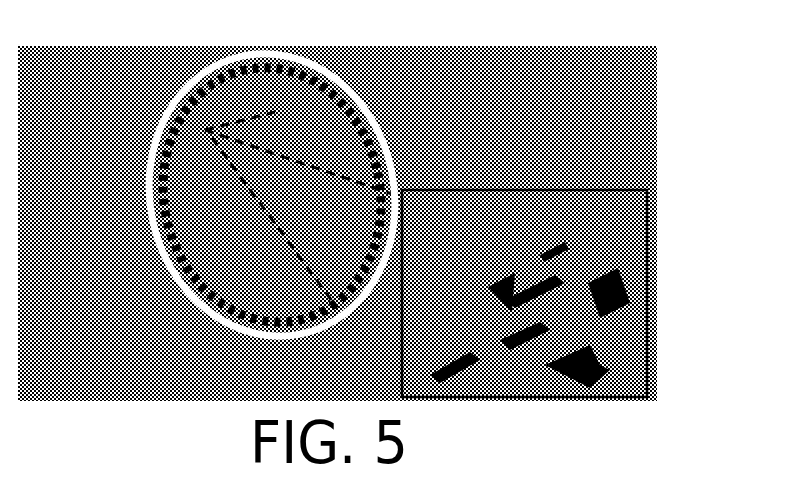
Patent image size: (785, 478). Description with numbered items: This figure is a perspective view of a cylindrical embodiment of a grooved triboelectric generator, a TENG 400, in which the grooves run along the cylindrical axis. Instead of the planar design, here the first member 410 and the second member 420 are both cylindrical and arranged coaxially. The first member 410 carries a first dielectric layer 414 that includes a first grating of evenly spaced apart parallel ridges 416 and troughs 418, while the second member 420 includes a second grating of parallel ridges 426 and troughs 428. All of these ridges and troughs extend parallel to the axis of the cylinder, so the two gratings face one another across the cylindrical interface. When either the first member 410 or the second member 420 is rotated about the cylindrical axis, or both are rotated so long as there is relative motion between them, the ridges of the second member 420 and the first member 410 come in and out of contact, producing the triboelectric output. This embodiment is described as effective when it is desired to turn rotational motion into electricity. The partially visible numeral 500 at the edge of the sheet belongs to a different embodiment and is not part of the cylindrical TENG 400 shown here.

The TENG 400 is at (57, 68).
The first member 410 is at (213, 300).
The first dielectric layer 414 is at (603, 287).
The ridges 416 is at (512, 350).
The troughs 418 is at (545, 335).
The second member 420 is at (190, 294).
The ridges 426 is at (475, 350).
The troughs 428 is at (553, 300).
The eye-tracking device (next figure) 500 is at (17, 471).